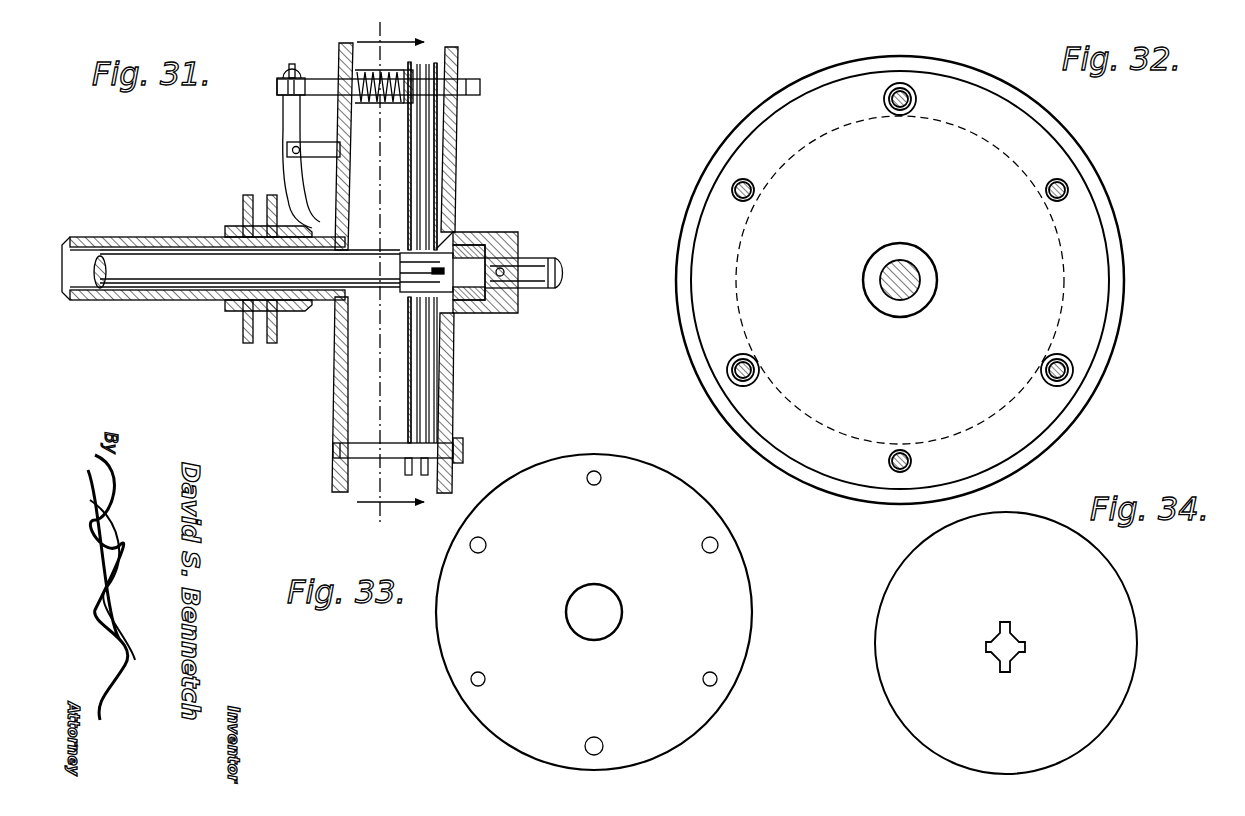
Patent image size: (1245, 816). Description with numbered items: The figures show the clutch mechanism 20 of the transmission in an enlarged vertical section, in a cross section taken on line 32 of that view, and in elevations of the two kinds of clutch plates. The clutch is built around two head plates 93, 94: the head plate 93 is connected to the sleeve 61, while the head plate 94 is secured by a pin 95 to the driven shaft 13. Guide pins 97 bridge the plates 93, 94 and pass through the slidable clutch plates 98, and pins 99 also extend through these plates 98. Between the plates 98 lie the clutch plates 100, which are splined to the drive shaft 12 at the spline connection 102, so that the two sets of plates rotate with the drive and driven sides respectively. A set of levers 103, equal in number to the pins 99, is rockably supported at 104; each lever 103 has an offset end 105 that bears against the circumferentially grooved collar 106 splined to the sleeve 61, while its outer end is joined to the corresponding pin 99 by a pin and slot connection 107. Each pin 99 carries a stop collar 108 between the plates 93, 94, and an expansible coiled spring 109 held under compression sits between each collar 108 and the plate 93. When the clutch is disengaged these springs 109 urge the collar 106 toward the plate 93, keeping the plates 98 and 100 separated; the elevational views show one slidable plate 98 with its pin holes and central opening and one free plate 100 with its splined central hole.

In FIG. 31, the drive shaft 12 is at (365, 298).
In FIG. 32, the drive shaft 12 is at (910, 285).
In FIG. 31, the driven shaft 13 is at (556, 276).
In FIG. 31, the clutch mechanism 20 is at (462, 52).
In FIG. 32, the clutch mechanism 20 is at (1058, 118).
In FIG. 31, the section line 32— 32 is at (390, 276).
In FIG. 31, the sleeve 61 is at (162, 236).
In FIG. 31, the head plate 93 is at (342, 190).
In FIG. 31, the head plate 94 is at (456, 150).
In FIG. 32, the head plate 94 is at (1076, 150).
In FIG. 31, the pin 95 is at (504, 278).
In FIG. 31, the guide pins 97 is at (350, 458).
In FIG. 32, the guide pins 97 is at (755, 190).
In FIG. 31, the slidable clutch plates 98 is at (425, 405).
In FIG. 32, the slidable clutch plates 98 is at (1085, 252).
In FIG. 33, the slidable clutch plates 98 is at (486, 518).
In FIG. 31, the pins 99 is at (482, 86).
In FIG. 32, the pins 99 is at (905, 112).
In FIG. 31, the clutch plates 100 is at (432, 190).
In FIG. 34, the clutch plates 100 is at (1095, 580).
In FIG. 31, the spline connection 102 is at (442, 248).
In FIG. 31, the levers 103 is at (284, 122).
In FIG. 31, the rockable support 104 is at (292, 150).
In FIG. 31, the offset end 105 is at (290, 195).
In FIG. 31, the circumferentially grooved collar 106 is at (248, 343).
In FIG. 31, the pin and slot connection 107 is at (283, 57).
In FIG. 31, the stop collar 108 is at (398, 104).
In FIG. 31, the expansible coiled spring 109 is at (366, 102).
In FIG. 32, the expansible coiled spring 109 is at (906, 96).